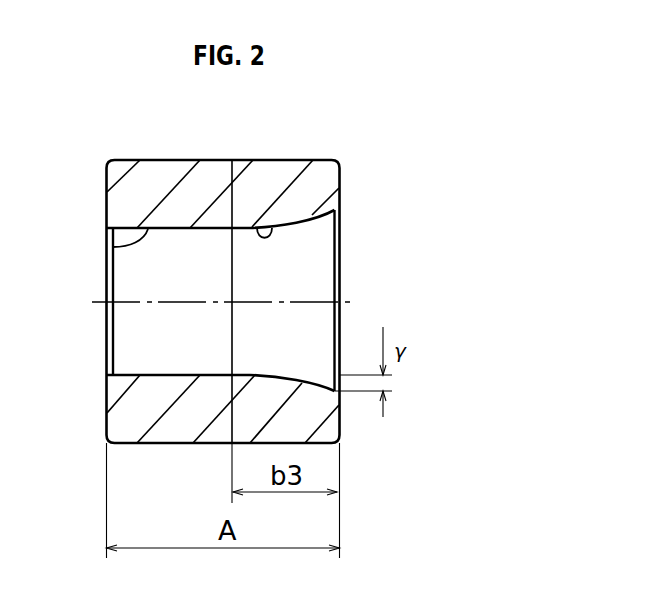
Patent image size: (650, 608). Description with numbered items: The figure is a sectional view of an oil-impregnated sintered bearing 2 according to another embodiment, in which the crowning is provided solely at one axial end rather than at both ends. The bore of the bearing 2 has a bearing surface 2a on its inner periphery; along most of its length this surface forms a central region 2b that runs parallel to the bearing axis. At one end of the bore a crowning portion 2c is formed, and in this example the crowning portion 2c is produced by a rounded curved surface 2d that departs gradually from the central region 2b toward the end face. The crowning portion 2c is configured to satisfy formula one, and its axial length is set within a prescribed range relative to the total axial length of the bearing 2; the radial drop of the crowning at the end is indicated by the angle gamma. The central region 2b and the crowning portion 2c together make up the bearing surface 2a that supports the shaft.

The oil-impregnated sintered bearing 2 is at (353, 178).
The inner bore surface of roller 2a is at (205, 243).
The central region 2b is at (112, 244).
The crowning portion 2c is at (290, 238).
The rounded curved surface 2d is at (251, 227).